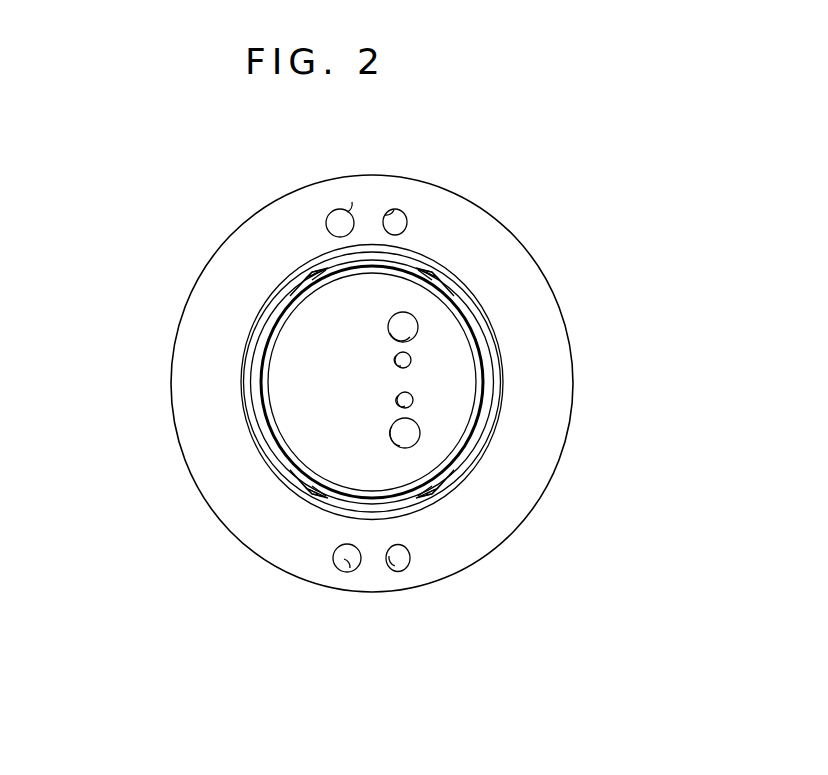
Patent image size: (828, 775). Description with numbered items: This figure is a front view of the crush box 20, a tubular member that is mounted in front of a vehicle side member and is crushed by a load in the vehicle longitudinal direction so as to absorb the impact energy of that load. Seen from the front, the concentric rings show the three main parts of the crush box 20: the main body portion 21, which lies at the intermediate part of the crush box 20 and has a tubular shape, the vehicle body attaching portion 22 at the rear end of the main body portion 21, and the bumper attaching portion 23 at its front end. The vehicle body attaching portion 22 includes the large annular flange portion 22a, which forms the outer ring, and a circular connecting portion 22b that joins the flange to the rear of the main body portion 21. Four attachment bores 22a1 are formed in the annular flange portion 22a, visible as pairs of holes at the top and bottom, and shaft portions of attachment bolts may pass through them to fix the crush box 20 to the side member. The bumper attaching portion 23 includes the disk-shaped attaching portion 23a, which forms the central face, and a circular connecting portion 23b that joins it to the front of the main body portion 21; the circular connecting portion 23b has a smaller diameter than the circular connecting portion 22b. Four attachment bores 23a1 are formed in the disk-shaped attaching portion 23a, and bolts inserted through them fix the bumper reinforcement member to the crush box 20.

The crush box 20 is at (500, 216).
The main body portion 21 is at (435, 494).
The vehicle body attaching portion 22 is at (487, 456).
The annular flange portion 22a is at (546, 313).
The attachment bores 22a1 is at (387, 216).
The circular connecting portion 22b is at (502, 375).
The bumper attaching portion 23 is at (273, 299).
The disk-shaped attaching portion 23a is at (294, 440).
The attachment bores 23a1 is at (388, 337).
The circular connecting portion 23b is at (262, 381).